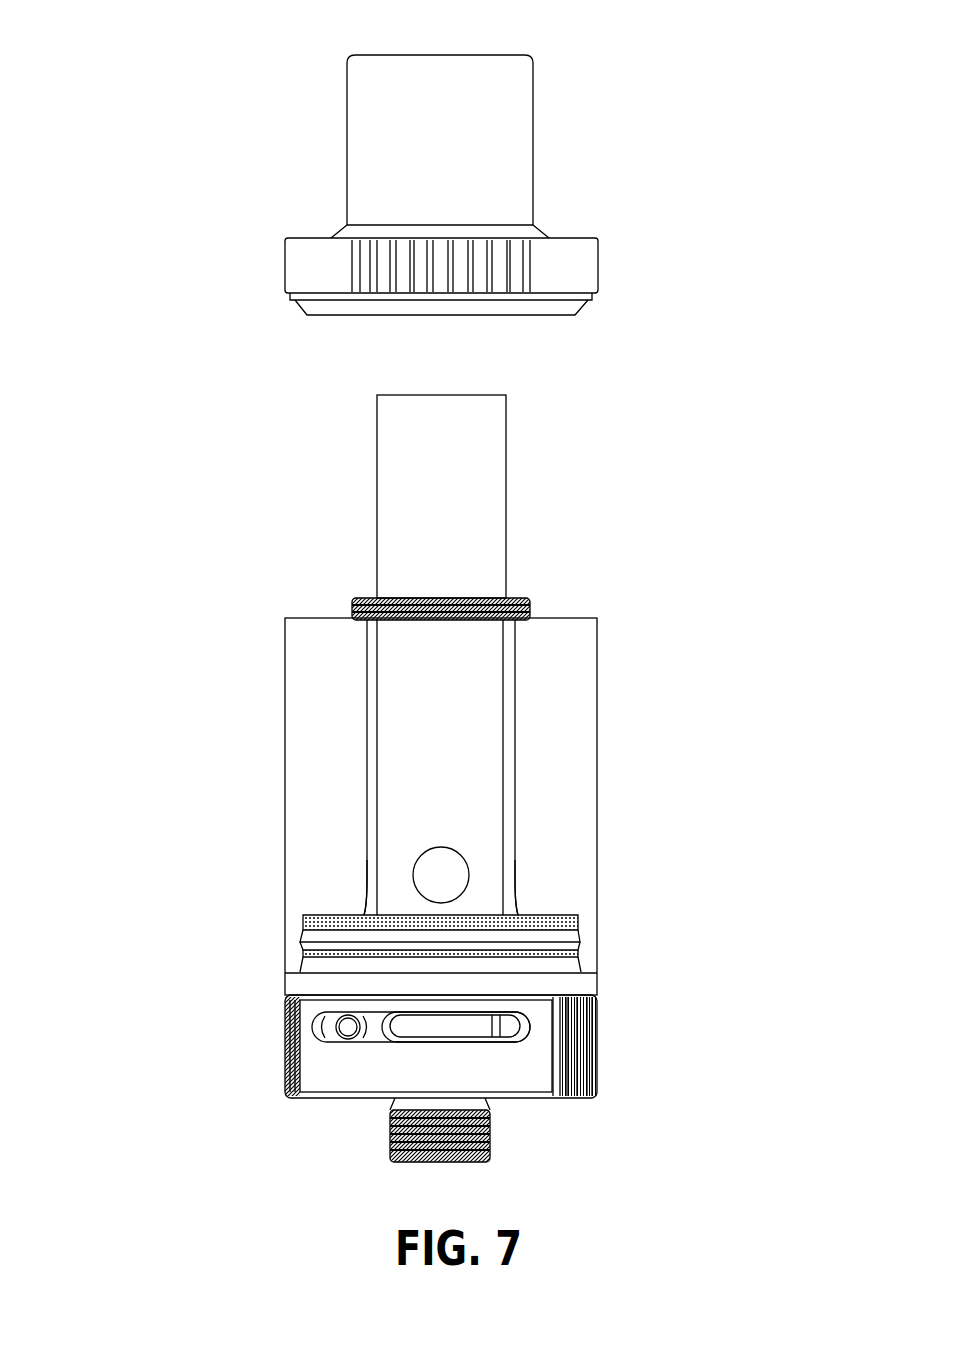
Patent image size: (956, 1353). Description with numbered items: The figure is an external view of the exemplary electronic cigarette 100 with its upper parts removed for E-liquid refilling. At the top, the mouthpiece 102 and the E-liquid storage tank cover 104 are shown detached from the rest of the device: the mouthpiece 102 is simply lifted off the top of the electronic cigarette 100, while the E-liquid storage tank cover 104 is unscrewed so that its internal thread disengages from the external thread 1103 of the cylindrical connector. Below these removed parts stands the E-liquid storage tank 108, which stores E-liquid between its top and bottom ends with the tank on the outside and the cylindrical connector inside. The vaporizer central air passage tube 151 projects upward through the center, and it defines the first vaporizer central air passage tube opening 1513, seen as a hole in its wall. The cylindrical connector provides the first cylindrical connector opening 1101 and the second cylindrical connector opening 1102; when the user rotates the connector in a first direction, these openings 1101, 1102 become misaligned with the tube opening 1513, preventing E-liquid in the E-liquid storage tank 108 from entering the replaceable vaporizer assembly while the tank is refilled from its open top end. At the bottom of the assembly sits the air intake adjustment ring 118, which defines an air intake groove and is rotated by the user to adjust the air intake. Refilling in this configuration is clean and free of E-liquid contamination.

The electronic cigarette 100 is at (82, 90).
The mouthpiece 102 is at (348, 158).
The E-liquid storage tank cover 104 is at (285, 267).
The vaporizer central air passage tube 151 is at (506, 472).
The external thread 1103 is at (525, 607).
The E-liquid storage tank 108 is at (285, 780).
The first cylindrical connector opening 1101 is at (373, 888).
The second cylindrical connector opening 1102 is at (507, 890).
The first vaporizer central air passage tube opening 1513 is at (443, 875).
The air intake adjustment ring 118 is at (285, 1045).